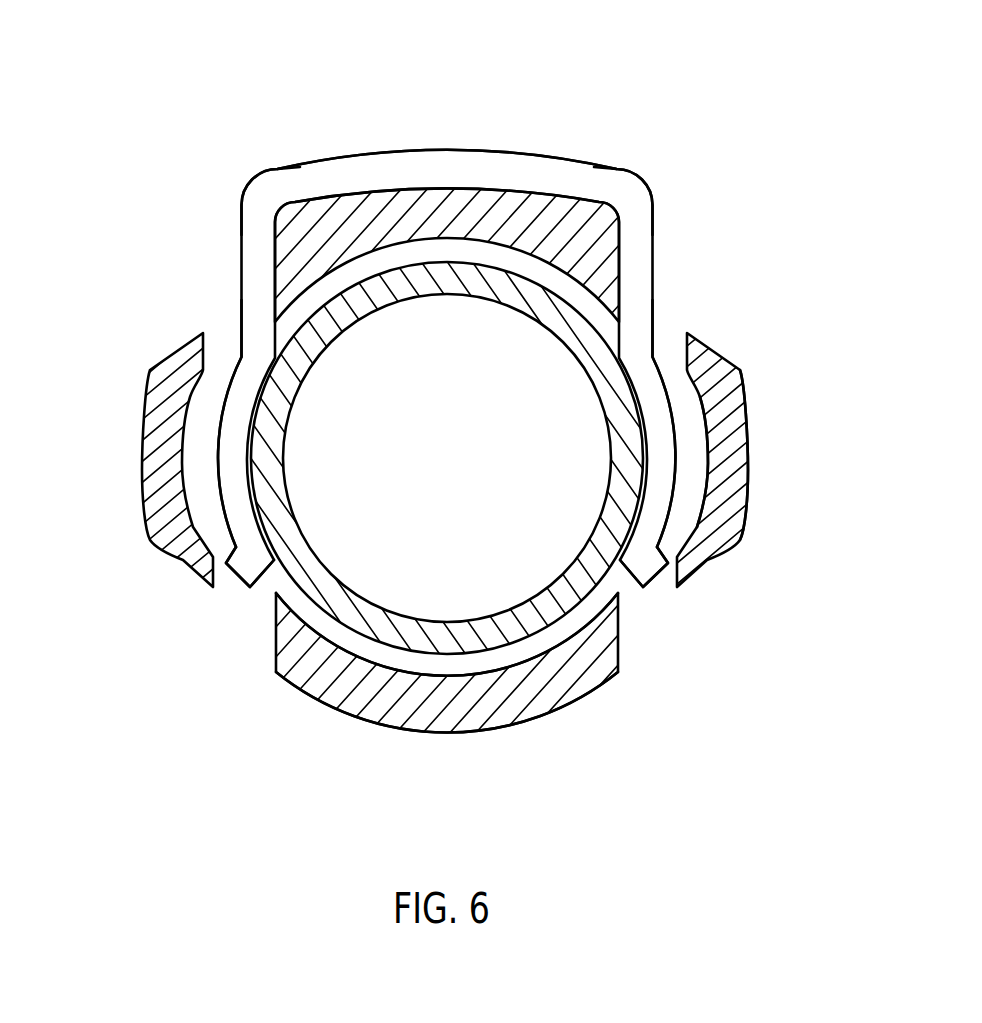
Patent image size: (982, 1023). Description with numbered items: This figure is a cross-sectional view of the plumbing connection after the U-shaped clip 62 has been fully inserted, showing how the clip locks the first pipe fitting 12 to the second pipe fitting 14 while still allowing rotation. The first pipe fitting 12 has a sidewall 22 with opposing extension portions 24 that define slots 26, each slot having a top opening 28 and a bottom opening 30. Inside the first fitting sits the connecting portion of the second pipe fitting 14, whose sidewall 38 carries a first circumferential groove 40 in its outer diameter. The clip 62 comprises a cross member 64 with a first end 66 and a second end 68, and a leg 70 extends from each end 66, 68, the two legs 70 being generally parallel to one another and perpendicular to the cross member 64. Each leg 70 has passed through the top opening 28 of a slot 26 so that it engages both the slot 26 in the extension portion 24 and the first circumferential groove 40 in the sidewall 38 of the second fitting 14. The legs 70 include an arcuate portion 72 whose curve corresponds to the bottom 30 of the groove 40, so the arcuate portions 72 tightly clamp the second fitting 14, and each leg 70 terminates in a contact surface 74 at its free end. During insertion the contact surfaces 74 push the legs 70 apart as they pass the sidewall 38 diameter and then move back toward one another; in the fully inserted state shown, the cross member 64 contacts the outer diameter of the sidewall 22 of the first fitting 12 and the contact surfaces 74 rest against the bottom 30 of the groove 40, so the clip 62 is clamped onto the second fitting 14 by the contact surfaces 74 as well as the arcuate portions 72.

The first pipe fitting 12 is at (439, 740).
The second pipe fitting 14 is at (455, 620).
The sidewall 22 is at (557, 680).
The extension portions 24 is at (753, 433).
The slots 26 is at (687, 492).
The top opening 28 is at (668, 352).
The bottom opening 30 is at (655, 602).
The sidewall 38 is at (447, 458).
The first circumferential groove 40 is at (337, 633).
The U-shaped clip 62 is at (477, 354).
The cross member 64 is at (458, 172).
The first end 66 is at (249, 192).
The second end 68 is at (650, 201).
The legs 70 is at (250, 271).
The arcuate portion 72 is at (218, 473).
The contact surface 74 is at (273, 560).